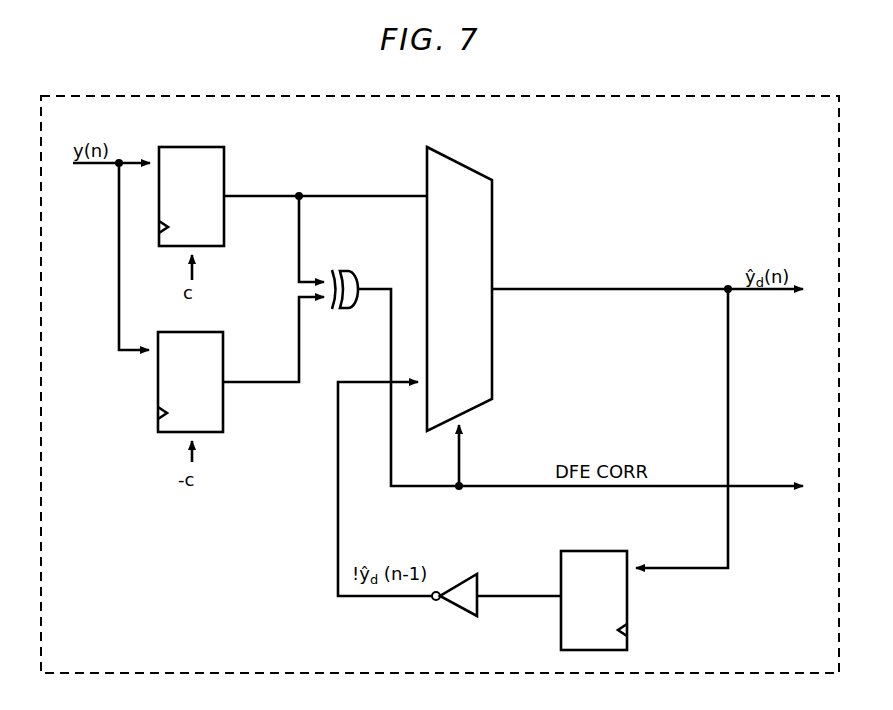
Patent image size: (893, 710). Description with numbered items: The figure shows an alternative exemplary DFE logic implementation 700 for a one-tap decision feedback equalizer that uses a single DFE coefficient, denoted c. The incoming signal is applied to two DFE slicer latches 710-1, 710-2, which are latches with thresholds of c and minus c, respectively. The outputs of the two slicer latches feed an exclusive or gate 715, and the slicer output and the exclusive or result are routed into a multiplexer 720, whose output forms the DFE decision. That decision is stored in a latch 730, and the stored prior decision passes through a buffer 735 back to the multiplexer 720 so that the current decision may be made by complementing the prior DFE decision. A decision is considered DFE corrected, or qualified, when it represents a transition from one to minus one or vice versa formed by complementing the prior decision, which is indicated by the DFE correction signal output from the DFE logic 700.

The DFE logic implementation 700 is at (603, 96).
The DFE slicer latch 710-1 is at (192, 147).
The DFE slicer latch 710-2 is at (191, 332).
The exclusive or gate 715 is at (347, 271).
The multiplexer 720 is at (460, 164).
The latch 730 is at (580, 551).
The buffer 735 is at (477, 580).